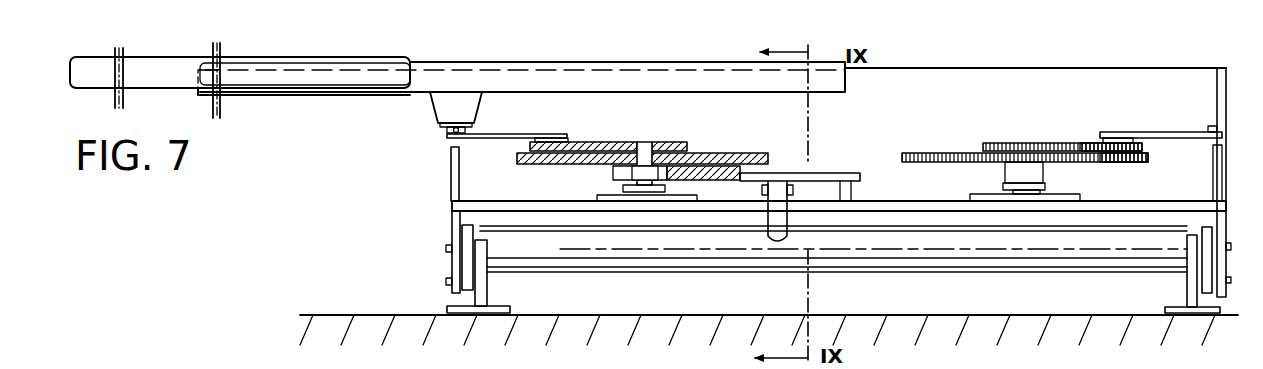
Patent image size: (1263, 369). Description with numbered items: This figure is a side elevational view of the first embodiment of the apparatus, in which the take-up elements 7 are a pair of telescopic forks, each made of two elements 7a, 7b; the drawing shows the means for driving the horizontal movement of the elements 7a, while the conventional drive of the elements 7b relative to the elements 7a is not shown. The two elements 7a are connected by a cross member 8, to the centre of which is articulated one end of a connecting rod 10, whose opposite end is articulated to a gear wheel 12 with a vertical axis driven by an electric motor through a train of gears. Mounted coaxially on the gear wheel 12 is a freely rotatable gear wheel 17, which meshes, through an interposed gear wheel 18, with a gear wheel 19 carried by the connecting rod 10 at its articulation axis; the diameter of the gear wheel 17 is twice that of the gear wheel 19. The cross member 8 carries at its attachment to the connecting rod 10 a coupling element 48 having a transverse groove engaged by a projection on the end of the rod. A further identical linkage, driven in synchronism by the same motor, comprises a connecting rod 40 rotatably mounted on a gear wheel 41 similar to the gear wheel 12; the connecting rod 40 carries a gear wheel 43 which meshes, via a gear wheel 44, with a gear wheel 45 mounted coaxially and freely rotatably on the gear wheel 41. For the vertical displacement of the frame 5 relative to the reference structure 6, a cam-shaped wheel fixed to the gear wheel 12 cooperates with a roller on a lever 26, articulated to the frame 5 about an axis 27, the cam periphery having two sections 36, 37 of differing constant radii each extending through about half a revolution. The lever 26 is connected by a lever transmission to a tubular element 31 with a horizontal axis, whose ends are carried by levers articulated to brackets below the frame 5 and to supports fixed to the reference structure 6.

The frame 5 is at (443, 228).
The reference structure 6 is at (353, 327).
The take-up elements 7 is at (328, 103).
The fork element 7a is at (588, 80).
The fork element 7b is at (175, 77).
The cross member 8 is at (437, 102).
The connecting rod 10 is at (490, 142).
The gear wheel 12 is at (746, 153).
The gear wheel 17 is at (673, 142).
The gear wheel 18 is at (600, 141).
The gear wheel 19 is at (548, 135).
The lever 26 is at (815, 173).
The axis 27 is at (847, 171).
The tubular element 31 is at (1065, 250).
The section 36 is at (613, 174).
The section 37 is at (747, 168).
The connecting rod 40 is at (1183, 132).
The gear wheel 41 is at (933, 153).
The gear wheel 43 is at (1125, 162).
The gear wheel 44 is at (1082, 143).
The gear wheel 45 is at (1005, 143).
The coupling element 48 is at (447, 131).